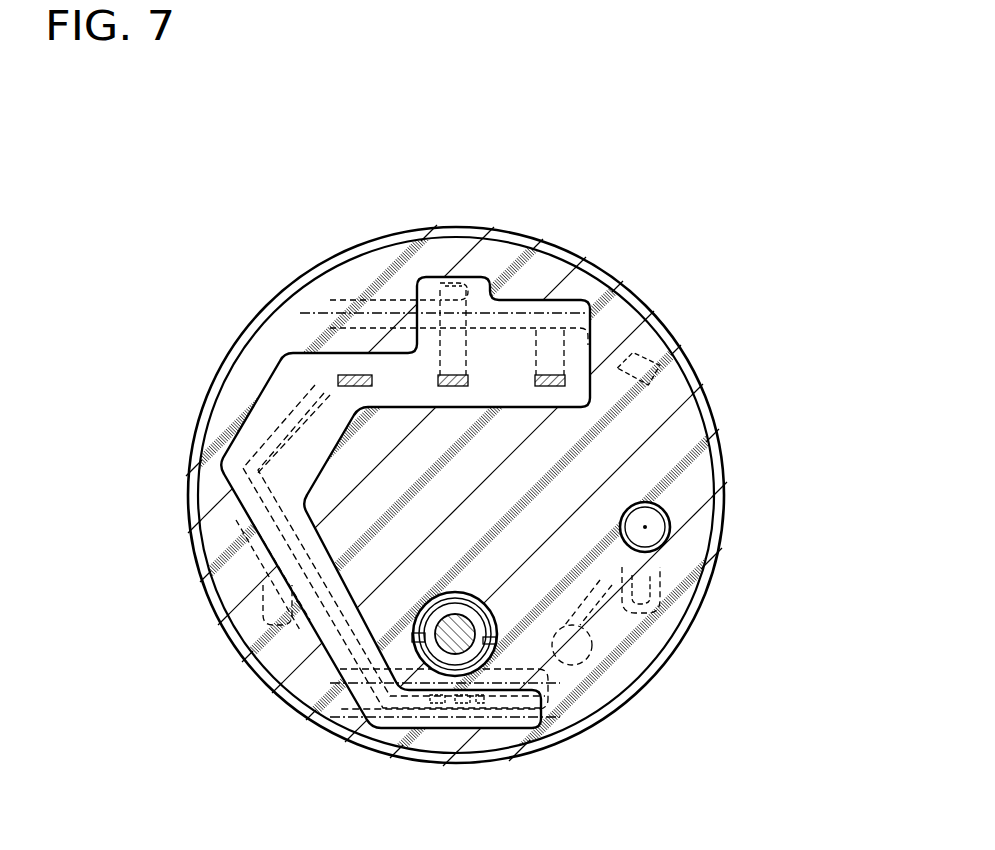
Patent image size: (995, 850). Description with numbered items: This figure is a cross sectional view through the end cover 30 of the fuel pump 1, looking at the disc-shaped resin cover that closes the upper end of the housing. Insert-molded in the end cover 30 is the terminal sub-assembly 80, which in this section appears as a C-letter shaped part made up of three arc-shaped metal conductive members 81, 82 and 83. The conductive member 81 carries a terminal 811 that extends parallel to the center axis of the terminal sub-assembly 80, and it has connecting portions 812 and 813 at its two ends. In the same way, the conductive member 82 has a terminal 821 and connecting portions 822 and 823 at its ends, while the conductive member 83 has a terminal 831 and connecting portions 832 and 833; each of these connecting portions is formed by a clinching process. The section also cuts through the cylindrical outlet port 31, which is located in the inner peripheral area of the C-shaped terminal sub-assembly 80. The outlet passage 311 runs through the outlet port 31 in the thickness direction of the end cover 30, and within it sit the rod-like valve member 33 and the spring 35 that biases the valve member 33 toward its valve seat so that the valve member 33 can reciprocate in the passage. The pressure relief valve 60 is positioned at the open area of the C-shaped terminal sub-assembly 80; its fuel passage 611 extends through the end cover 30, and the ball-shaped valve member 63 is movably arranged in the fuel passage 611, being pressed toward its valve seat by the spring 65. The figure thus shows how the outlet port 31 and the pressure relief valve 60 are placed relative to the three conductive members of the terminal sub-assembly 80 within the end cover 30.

The fuel pump 1 is at (322, 192).
The end cover 30 is at (705, 406).
The outlet port 31 is at (512, 613).
The outlet passage 311 is at (477, 690).
The valve member 33 is at (528, 657).
The spring 35 is at (522, 625).
The pressure relief valve 60 is at (668, 502).
The fuel passage 611 is at (647, 529).
The ball-shaped valve member 63 is at (670, 528).
The spring 65 is at (658, 552).
The terminal sub-assembly 80 is at (572, 296).
The conductive member 81 is at (567, 299).
The terminal 811 is at (553, 376).
The connecting portion 812 is at (653, 360).
The connecting portion 813 is at (232, 552).
The conductive member 82 is at (370, 300).
The terminal 821 is at (448, 272).
The connecting portion 822 is at (442, 280).
The connecting portion 823 is at (440, 698).
The conductive member 83 is at (305, 650).
The terminal 831 is at (340, 375).
The connecting portion 832 is at (240, 393).
The connecting portion 833 is at (657, 598).